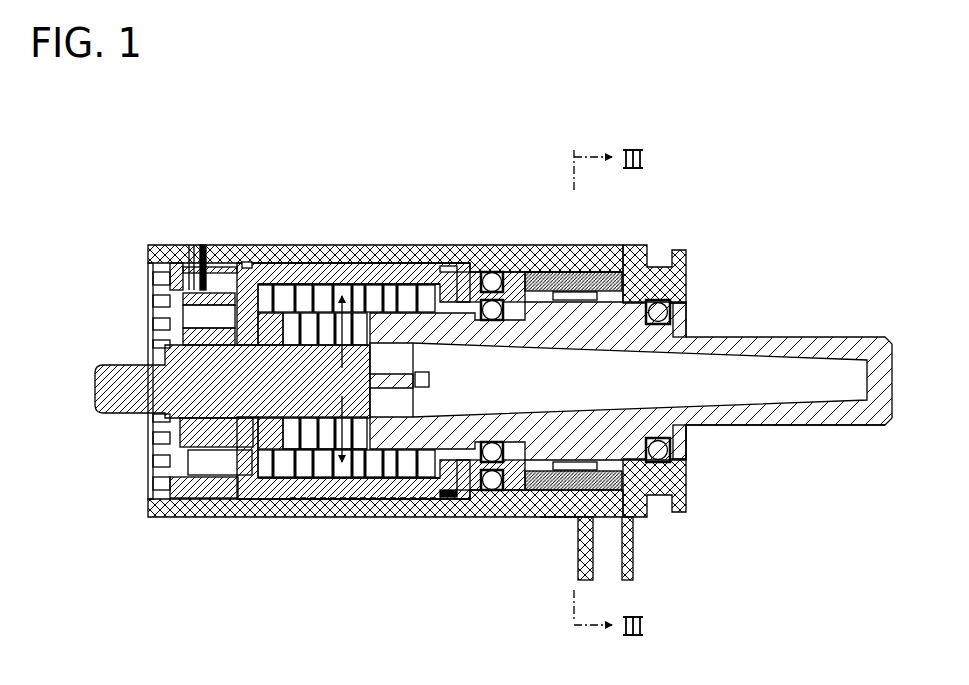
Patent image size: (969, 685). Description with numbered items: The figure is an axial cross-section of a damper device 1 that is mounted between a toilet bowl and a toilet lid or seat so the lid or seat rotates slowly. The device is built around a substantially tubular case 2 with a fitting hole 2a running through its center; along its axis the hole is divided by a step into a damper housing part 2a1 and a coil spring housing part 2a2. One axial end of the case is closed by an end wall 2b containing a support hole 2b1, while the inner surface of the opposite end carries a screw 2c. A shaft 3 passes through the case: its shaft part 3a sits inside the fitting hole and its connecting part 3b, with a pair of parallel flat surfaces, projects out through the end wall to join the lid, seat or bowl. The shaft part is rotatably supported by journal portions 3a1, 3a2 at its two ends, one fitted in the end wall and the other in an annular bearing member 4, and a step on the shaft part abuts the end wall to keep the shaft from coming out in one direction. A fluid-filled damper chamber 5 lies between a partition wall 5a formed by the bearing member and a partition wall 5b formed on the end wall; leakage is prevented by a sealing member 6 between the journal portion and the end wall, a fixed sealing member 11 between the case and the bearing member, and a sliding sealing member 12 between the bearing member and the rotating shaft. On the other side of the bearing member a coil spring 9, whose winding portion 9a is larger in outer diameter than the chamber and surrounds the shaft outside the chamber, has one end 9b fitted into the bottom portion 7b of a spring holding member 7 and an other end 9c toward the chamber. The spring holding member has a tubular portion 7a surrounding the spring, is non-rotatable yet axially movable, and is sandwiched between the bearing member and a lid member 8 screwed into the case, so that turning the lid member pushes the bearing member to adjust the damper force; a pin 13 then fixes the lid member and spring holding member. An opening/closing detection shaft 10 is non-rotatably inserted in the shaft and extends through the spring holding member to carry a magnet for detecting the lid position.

The damper device 1 is at (424, 58).
The case 2 is at (444, 241).
The fitting hole 2a is at (368, 268).
The damper housing part 2a1 is at (590, 270).
The coil spring housing part 2a2 is at (331, 275).
The end wall 2b is at (689, 268).
The support hole 2b1 is at (697, 309).
The screw 2c is at (223, 260).
The shaft 3 is at (796, 336).
The shaft part 3a is at (565, 501).
The journal portion 3a1 is at (471, 498).
The journal portion 3a2 is at (666, 433).
The connecting part 3b is at (797, 421).
The bearing member 4 is at (472, 265).
The damper chamber 5 is at (618, 263).
The partition wall 5a is at (540, 296).
The partition wall 5b is at (648, 260).
The sealing member 6 is at (663, 513).
The spring holding member 7 is at (396, 259).
The tubular portion 7a is at (372, 499).
The bottom portion 7b is at (249, 461).
The lid member 8 is at (176, 258).
The coil spring 9 is at (298, 280).
The winding portion 9a is at (320, 468).
The one end 9b is at (223, 469).
The other end 9c is at (428, 389).
The opening/closing detection shaft 10 is at (127, 362).
The fixed sealing member 11 is at (493, 270).
The sliding sealing member 12 is at (511, 271).
The pin 13 is at (197, 255).